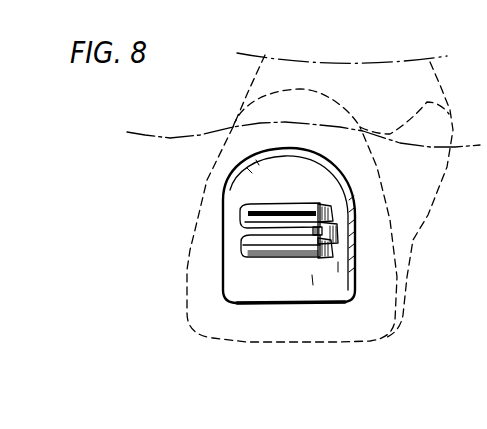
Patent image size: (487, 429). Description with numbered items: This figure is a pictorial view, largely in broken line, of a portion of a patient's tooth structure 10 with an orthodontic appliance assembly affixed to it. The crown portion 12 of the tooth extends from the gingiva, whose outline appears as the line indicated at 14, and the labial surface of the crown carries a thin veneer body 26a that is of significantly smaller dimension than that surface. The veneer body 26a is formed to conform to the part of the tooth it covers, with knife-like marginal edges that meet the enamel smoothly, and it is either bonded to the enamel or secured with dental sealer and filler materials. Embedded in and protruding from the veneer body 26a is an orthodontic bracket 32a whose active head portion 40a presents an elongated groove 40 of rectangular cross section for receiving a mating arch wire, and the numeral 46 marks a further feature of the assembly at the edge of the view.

The tooth structure 10 is at (302, 358).
The crown portion 12 is at (408, 237).
The panel / mounting surface 14 is at (137, 134).
The veneer body 26a is at (253, 185).
The lower contact clip 32a is at (250, 258).
The upper contact clip 40a is at (288, 234).
The groove 40 is at (463, 428).
The terminal 46 is at (479, 185).